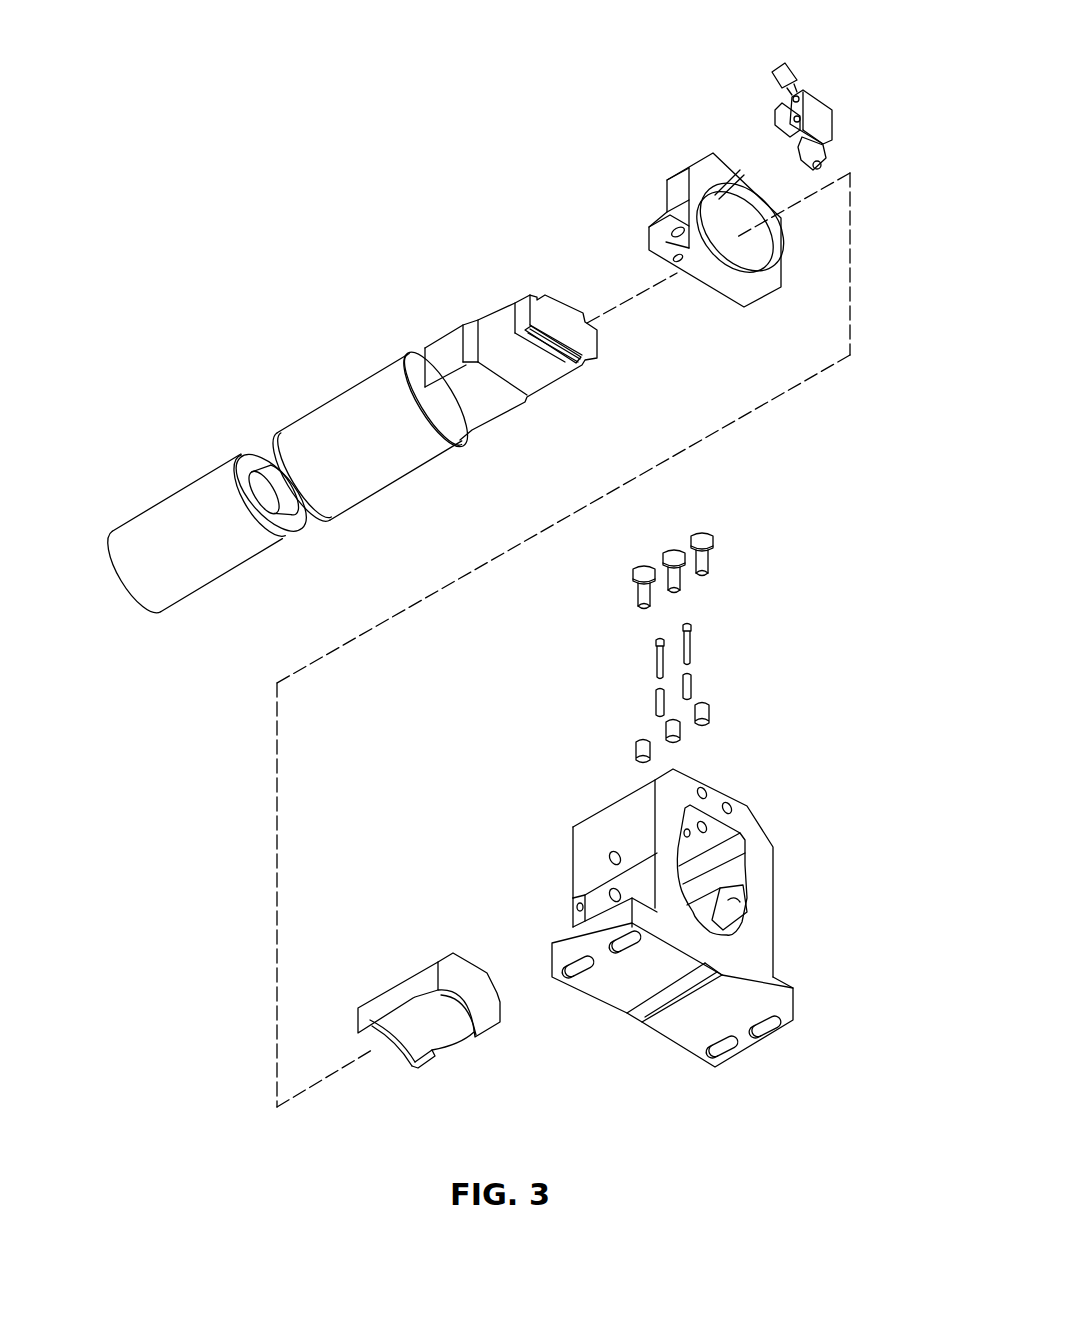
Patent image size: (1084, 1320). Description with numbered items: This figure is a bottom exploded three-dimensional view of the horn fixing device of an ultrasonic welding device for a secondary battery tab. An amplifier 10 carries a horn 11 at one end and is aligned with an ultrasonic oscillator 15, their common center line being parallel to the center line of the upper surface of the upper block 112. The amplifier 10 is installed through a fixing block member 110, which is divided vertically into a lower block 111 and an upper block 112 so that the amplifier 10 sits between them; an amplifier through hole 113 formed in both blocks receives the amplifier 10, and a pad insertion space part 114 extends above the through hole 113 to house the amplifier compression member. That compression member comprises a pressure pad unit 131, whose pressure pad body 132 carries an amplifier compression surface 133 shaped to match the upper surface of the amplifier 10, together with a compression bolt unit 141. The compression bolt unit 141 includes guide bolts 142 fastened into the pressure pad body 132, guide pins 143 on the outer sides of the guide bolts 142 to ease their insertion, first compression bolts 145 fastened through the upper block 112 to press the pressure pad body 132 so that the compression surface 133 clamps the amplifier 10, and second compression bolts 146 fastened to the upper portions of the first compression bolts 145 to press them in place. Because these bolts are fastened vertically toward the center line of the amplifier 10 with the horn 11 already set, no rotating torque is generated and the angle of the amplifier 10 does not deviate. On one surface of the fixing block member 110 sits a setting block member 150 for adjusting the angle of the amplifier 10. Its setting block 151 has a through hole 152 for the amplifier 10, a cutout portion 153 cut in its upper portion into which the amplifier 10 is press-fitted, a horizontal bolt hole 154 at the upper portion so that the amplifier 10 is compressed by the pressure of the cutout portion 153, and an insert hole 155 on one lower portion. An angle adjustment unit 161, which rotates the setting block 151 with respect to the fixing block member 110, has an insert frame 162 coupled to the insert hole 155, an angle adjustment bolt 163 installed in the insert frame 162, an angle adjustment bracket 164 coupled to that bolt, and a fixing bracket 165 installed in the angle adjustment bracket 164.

The amplifier 10 is at (347, 407).
The horn 11 is at (490, 322).
The ultrasonic oscillator 15 is at (186, 504).
The fixing block member 110 is at (762, 810).
The lower block 111 is at (755, 965).
The upper block 112 is at (755, 830).
The amplifier through hole 113 is at (743, 903).
The pad insertion space part 114 is at (745, 855).
The pressure pad unit 131 is at (432, 953).
The pressure pad body 132 is at (410, 982).
The amplifier compression surface 133 is at (418, 1068).
The compression bolt unit 141 is at (617, 675).
The guide bolts 142 is at (698, 648).
The guide pins 143 is at (705, 683).
The first compression bolts 145 is at (722, 712).
The second compression bolts 146 is at (712, 553).
The setting block member 150 is at (650, 98).
The setting block 151 is at (735, 292).
The through hole 152 is at (738, 257).
The cutout portion 153 is at (735, 180).
The horizontal bolt hole 154 is at (678, 162).
The insert hole 155 is at (672, 232).
The angle adjustment unit 161 is at (762, 78).
The insert frame 162 is at (830, 152).
The angle adjustment bolt 163 is at (796, 76).
The angle adjustment bracket 164 is at (782, 110).
The fixing bracket 165 is at (850, 115).